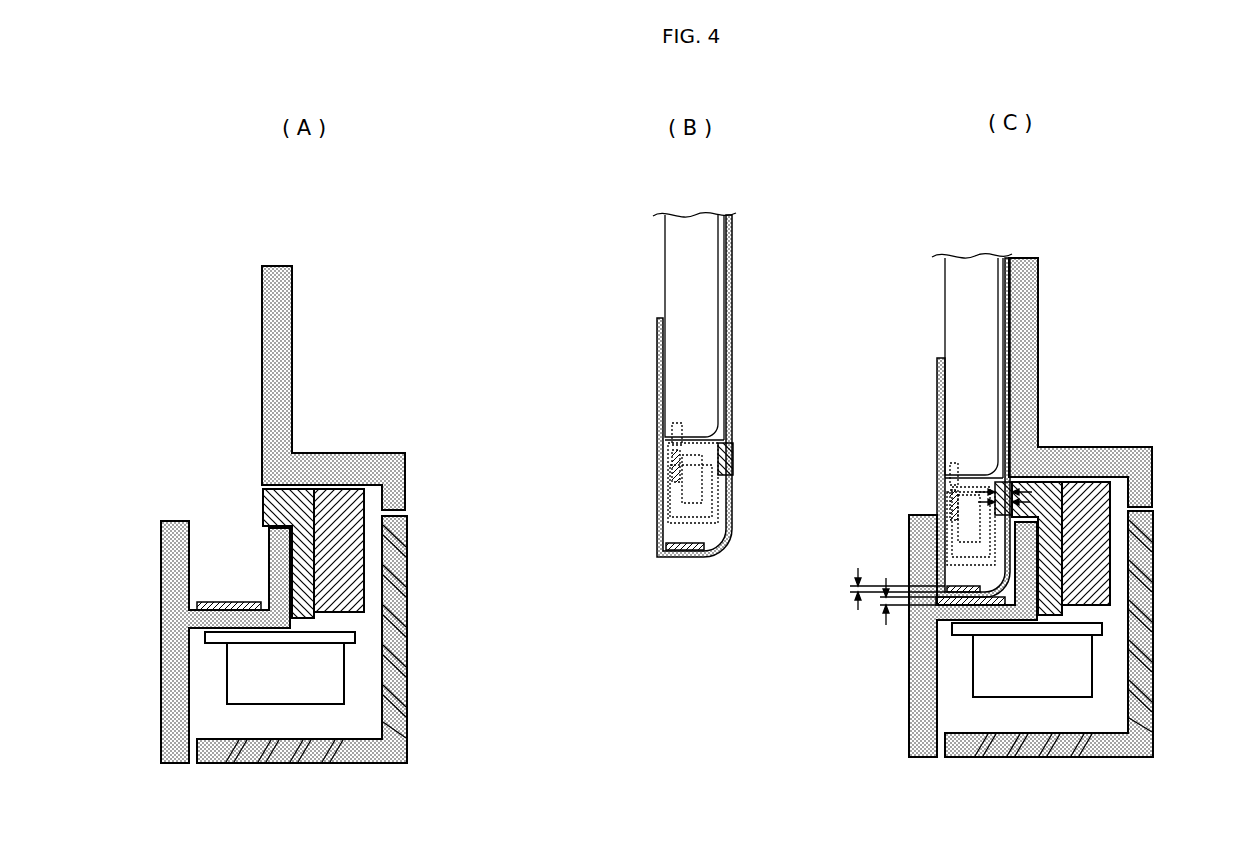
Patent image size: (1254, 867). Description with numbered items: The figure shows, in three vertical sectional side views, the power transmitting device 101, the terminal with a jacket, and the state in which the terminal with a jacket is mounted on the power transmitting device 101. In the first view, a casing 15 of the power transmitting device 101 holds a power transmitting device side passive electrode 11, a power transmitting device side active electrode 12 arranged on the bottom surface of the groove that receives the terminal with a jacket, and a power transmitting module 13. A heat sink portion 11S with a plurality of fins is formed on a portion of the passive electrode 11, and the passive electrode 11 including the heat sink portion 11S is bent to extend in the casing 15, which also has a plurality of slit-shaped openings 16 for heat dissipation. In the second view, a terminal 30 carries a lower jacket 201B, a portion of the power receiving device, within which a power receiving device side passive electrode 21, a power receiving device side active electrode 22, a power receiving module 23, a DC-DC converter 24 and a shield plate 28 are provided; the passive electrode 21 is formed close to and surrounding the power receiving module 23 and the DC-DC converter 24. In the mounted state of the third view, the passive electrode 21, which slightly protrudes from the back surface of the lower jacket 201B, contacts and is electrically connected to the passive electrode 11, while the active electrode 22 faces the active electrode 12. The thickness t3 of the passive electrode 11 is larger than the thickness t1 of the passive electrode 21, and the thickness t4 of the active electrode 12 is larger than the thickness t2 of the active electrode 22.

The power transmitting device 101 is at (177, 262).
The power transmitting device side passive electrode 11 is at (297, 502).
The heat sink portion 11S is at (343, 500).
The power transmitting device side active electrode 12 is at (222, 601).
The power transmitting module 13 is at (305, 690).
The casing 15 is at (405, 480).
The slit-shaped openings 16 is at (408, 565).
The power receiving device side passive electrode 21 is at (736, 460).
The power receiving device side active electrode 22 is at (667, 546).
The power receiving module 23 is at (657, 492).
The DC-DC converter 24 is at (826, 496).
The shield plate 28 is at (717, 513).
The terminal 30 is at (678, 272).
The lower jacket 201B is at (736, 300).
The thickness of power receiving device side passive electrode t1 is at (992, 490).
The thickness of power receiving device side active electrode t2 is at (888, 589).
The thickness of power transmitting device side passive electrode t3 is at (1038, 484).
The thickness of power transmitting device side active electrode t4 is at (900, 609).